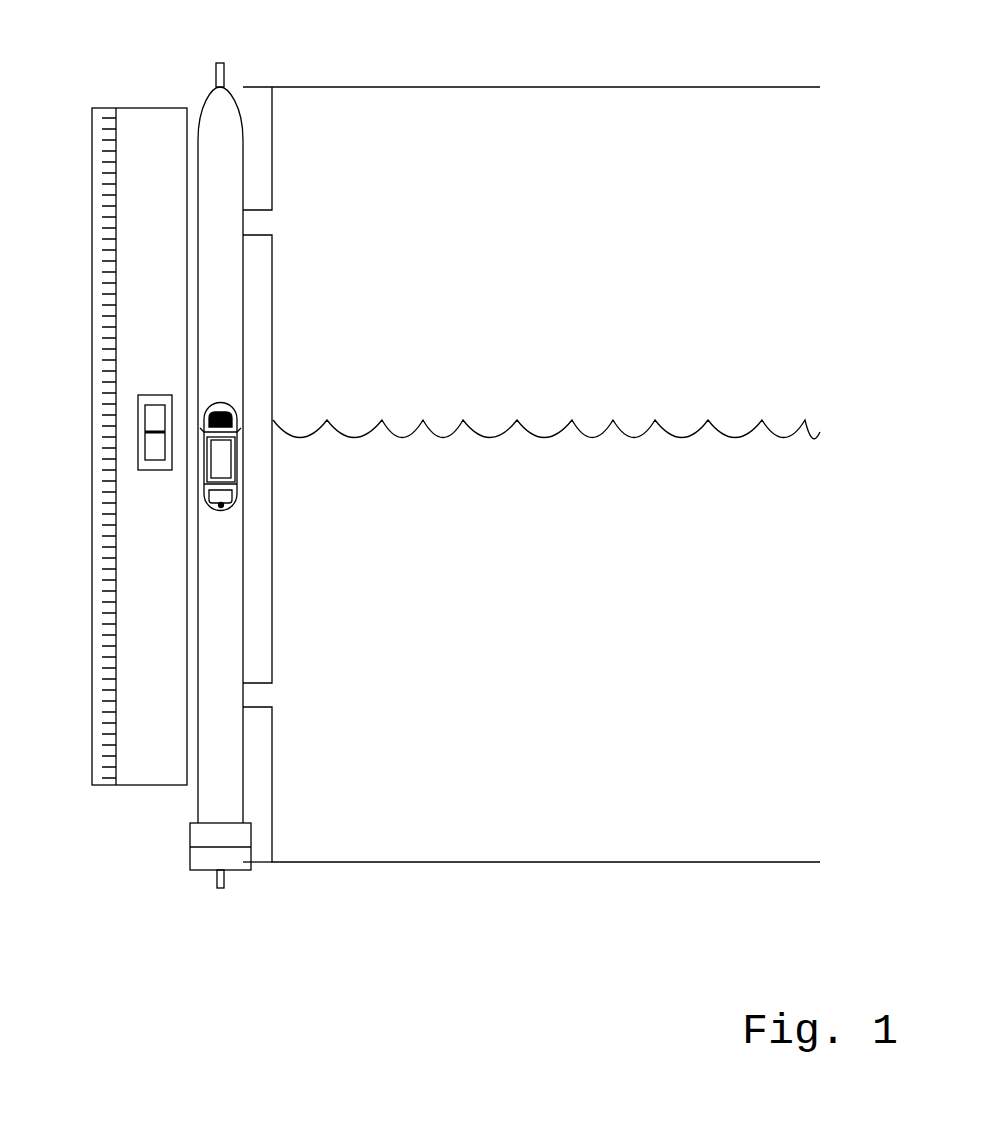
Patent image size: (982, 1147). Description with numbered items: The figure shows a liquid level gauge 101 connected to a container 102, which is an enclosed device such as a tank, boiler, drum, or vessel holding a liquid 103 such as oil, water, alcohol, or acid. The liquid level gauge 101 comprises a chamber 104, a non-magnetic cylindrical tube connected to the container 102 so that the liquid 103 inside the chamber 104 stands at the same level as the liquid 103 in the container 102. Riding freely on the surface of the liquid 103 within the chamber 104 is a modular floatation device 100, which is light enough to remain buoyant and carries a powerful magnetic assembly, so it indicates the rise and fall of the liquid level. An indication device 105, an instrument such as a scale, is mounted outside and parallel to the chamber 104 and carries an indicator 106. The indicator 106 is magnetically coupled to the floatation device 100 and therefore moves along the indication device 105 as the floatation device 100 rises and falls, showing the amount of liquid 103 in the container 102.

The floatation device 100 is at (225, 403).
The liquid level gauge 101 is at (207, 130).
The container 102 is at (712, 158).
The liquid 103 is at (697, 463).
The chamber 104 is at (223, 148).
The indication device 105 is at (152, 758).
The indicator 106 is at (150, 435).